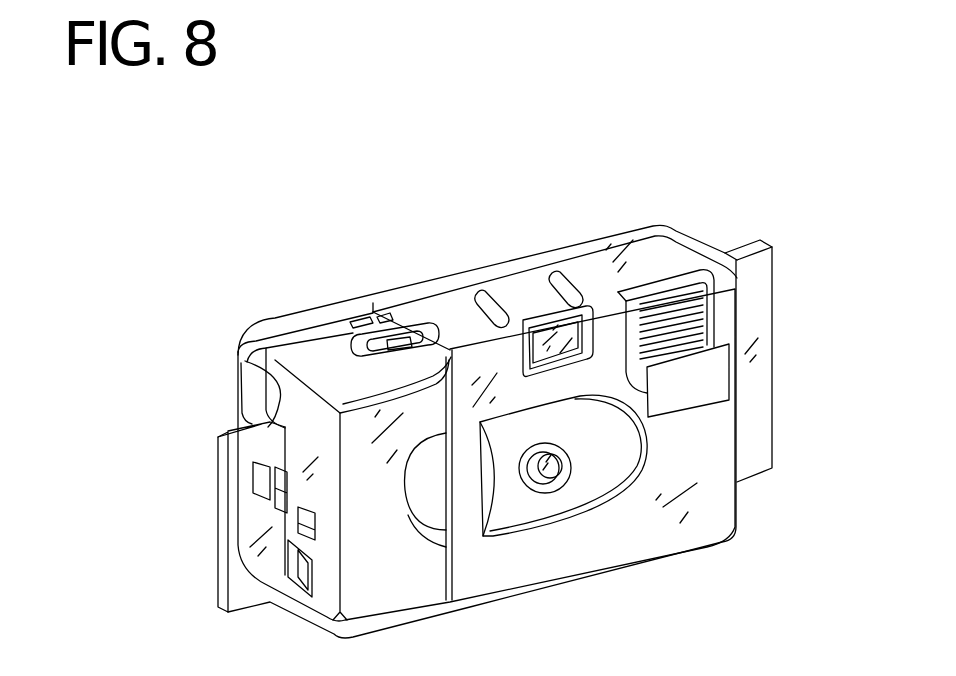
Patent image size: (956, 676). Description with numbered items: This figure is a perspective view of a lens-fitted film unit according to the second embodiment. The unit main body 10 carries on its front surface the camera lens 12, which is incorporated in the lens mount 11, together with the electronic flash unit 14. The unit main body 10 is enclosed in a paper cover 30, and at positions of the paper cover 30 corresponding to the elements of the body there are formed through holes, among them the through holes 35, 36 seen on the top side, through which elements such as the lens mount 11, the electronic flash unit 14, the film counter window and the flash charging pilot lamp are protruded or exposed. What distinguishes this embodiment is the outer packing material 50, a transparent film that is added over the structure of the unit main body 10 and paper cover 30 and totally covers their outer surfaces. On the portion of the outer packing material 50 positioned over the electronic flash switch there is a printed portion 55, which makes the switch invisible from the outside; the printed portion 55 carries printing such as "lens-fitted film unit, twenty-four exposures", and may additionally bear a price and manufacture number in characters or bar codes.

The unit main body 10 is at (307, 340).
The lens mount 11 is at (603, 472).
The camera lens 12 is at (532, 493).
The electronic flash unit 14 is at (662, 287).
The paper cover 30 is at (521, 262).
The through hole 35 is at (485, 298).
The through hole 36 is at (563, 283).
The outer packing material 50 is at (397, 283).
The printed portion 55 is at (730, 377).